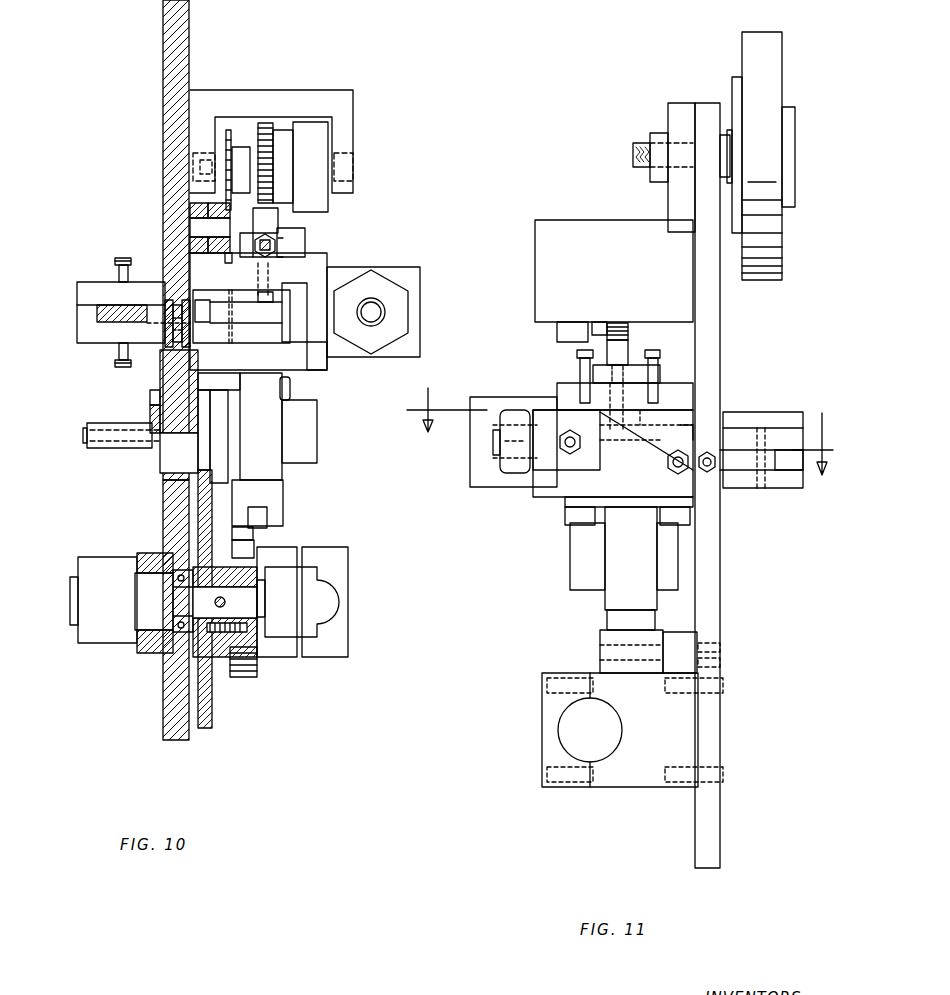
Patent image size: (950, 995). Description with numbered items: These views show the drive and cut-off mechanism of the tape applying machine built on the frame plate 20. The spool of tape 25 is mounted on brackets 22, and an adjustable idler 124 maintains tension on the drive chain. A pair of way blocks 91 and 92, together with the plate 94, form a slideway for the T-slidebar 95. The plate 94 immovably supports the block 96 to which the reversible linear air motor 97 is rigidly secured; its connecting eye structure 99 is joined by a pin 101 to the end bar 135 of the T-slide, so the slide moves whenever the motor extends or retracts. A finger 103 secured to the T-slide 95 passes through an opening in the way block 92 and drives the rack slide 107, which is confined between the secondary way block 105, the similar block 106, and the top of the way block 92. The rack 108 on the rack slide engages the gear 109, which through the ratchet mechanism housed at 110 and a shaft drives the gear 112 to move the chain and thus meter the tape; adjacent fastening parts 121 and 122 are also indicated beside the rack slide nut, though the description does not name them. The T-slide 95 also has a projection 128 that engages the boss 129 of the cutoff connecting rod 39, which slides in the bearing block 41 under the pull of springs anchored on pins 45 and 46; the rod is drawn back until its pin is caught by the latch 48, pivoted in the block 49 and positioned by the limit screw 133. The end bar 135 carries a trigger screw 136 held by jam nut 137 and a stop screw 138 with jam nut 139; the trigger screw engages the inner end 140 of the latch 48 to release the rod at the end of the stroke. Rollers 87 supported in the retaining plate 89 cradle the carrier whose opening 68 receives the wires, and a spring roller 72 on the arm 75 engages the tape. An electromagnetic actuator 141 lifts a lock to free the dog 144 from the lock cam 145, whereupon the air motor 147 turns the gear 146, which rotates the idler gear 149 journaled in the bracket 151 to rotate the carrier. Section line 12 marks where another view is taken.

In FIG. 10, the plate 20 is at (172, 15).
In FIG. 11, the plate 20 is at (712, 600).
In FIG. 11, the brackets 22 is at (682, 108).
In FIG. 11, the spool of tape 25 is at (775, 52).
In FIG. 10, the connecting rod 39 is at (103, 305).
In FIG. 10, the bearing block 41 is at (80, 325).
In FIG. 11, the bearing block 41 is at (772, 412).
In FIG. 10, the pin 45 is at (120, 258).
In FIG. 10, the pin 46 is at (115, 358).
In FIG. 11, the latch 48 is at (775, 455).
In FIG. 11, the block 49 is at (787, 490).
In FIG. 10, the opening 68 is at (172, 501).
In FIG. 10, the spring roller 72 is at (98, 448).
In FIG. 10, the arm 75 is at (150, 400).
In FIG. 10, the rollers 87 is at (165, 358).
In FIG. 10, the retaining plate 89 is at (165, 320).
In FIG. 10, the way block 91 is at (290, 360).
In FIG. 11, the way block 91 is at (633, 495).
In FIG. 10, the way block 92 is at (200, 268).
In FIG. 10, the plate 94 is at (323, 360).
In FIG. 11, the plate 94 is at (570, 494).
In FIG. 10, the T-slidebar 95 is at (282, 310).
In FIG. 11, the T-slidebar 95 is at (590, 423).
In FIG. 10, the block 96 is at (400, 268).
In FIG. 11, the block 96 is at (512, 397).
In FIG. 10, the air motor 97 is at (395, 302).
In FIG. 11, the connecting eye structure 99 is at (510, 410).
In FIG. 11, the pin 101 is at (498, 440).
In FIG. 10, the finger 103 is at (263, 302).
In FIG. 11, the finger 103 is at (620, 367).
In FIG. 11, the secondary way block 105 is at (578, 358).
In FIG. 11, the block 106 is at (635, 373).
In FIG. 10, the rack slide 107 is at (283, 243).
In FIG. 11, the rack slide 107 is at (635, 375).
In FIG. 10, the rack 108 is at (272, 220).
In FIG. 11, the rack 108 is at (622, 345).
In FIG. 10, the gear 109 is at (266, 123).
In FIG. 11, the gear 109 is at (617, 323).
In FIG. 10, the ratchet mechanism housing 110 is at (310, 127).
In FIG. 11, the ratchet mechanism housing 110 is at (573, 330).
In FIG. 10, the gear 112 is at (229, 130).
In FIG. 10, the washer 121 is at (283, 241).
In FIG. 10, the lock nut 122 is at (268, 258).
In FIG. 10, the adjustable idler 124 is at (225, 210).
In FIG. 10, the projection 128 is at (215, 323).
In FIG. 11, the projection 128 is at (670, 420).
In FIG. 10, the boss 129 is at (208, 300).
In FIG. 11, the boss 129 is at (690, 425).
In FIG. 11, the limit screw 133 is at (705, 475).
In FIG. 11, the end bar 135 is at (537, 480).
In FIG. 11, the trigger screw 136 is at (672, 460).
In FIG. 11, the jam nut 137 is at (655, 472).
In FIG. 11, the stop screw 138 is at (555, 470).
In FIG. 11, the jam nut 139 is at (548, 470).
In FIG. 11, the inner end 140 is at (728, 485).
In FIG. 10, the electromagnetic actuator 141 is at (317, 424).
In FIG. 11, the electromagnetic actuator 141 is at (578, 578).
In FIG. 10, the dog 144 is at (262, 515).
In FIG. 10, the lock cam 145 is at (260, 533).
In FIG. 10, the gear 146 is at (208, 700).
In FIG. 10, the air motor 147 is at (327, 598).
In FIG. 11, the air motor 147 is at (565, 733).
In FIG. 10, the idler gear 149 is at (203, 422).
In FIG. 10, the bracket 151 is at (222, 402).
In FIG. 11, the section line 12 is at (620, 429).